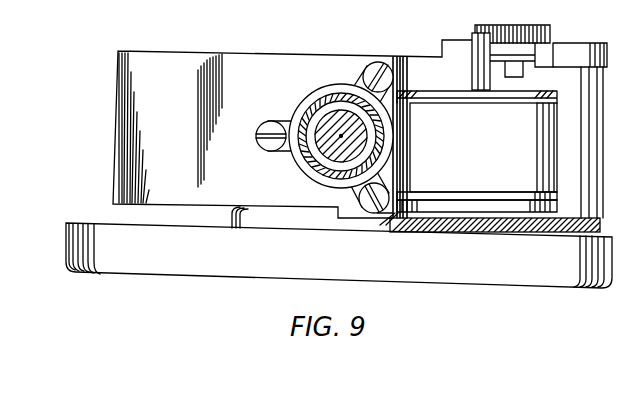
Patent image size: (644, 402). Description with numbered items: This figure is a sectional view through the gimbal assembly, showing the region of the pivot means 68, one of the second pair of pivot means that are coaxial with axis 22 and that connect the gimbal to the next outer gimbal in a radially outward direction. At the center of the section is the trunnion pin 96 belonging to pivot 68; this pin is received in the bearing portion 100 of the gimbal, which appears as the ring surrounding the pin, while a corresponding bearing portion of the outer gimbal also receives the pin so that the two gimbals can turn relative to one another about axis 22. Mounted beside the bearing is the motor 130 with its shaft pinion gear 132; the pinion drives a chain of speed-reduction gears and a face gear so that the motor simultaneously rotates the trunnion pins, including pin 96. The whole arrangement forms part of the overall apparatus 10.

The apparatus / base 10 is at (565, 37).
The axis 22 is at (316, 146).
The pivot means 68 is at (292, 155).
The trunnion pin 96 is at (341, 136).
The bearing portion 100 is at (316, 100).
The motor 130 is at (530, 173).
The shaft pinion gear 132 is at (472, 70).